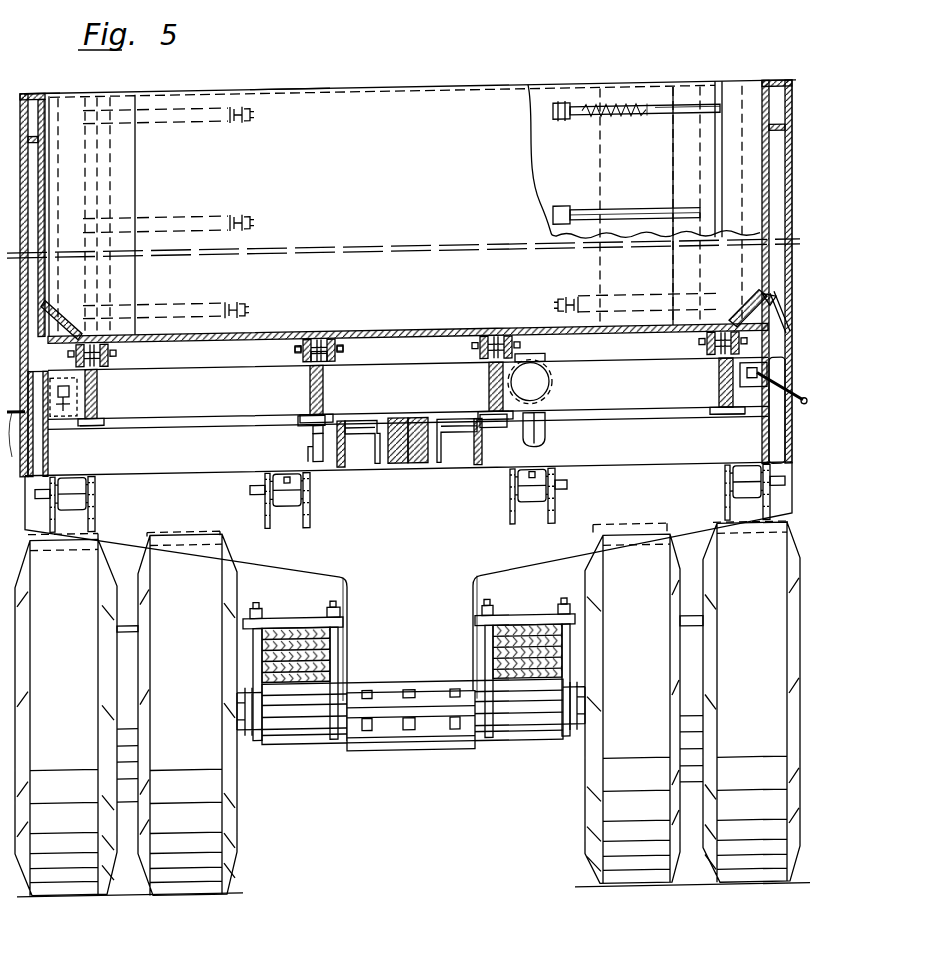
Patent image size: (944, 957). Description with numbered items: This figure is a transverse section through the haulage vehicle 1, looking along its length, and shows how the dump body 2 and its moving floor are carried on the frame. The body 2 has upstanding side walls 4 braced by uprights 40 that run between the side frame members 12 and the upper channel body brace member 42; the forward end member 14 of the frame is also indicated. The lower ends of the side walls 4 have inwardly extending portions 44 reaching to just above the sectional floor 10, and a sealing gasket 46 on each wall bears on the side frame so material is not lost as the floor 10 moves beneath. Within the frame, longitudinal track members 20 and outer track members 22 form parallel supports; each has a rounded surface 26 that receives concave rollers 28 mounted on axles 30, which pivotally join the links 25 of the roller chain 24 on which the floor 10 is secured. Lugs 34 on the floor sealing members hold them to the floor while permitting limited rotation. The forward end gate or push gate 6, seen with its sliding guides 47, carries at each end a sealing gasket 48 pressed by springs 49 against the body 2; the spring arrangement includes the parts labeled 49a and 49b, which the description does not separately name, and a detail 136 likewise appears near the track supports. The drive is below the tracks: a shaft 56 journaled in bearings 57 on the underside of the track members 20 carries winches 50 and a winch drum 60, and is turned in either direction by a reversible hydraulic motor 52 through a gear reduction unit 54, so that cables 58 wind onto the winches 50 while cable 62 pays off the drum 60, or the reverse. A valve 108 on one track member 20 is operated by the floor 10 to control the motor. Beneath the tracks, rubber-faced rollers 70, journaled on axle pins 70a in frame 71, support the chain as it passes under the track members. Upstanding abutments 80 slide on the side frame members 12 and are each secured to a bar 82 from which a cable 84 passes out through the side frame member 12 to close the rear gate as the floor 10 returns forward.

The haulage vehicle 1 is at (438, 752).
The body 2 is at (25, 84).
The side walls 4 is at (43, 197).
The forward end gate or push gate 6 is at (296, 103).
The sectional floor 10 is at (393, 331).
The side frame members 12 is at (48, 446).
The forward end member 14 is at (215, 470).
The track members 20 is at (312, 386).
The further track members 22 is at (97, 391).
The roller chain 24 is at (105, 354).
The links 25 is at (336, 342).
The rounded surface 26 is at (713, 358).
The concave rollers 28 is at (313, 342).
The axles 30 is at (297, 350).
The lugs 34 is at (325, 366).
The uprights 40 is at (784, 190).
The upper channel body brace member 42 is at (788, 92).
The inwardly extending portions 44 is at (768, 310).
The sealing gasket 46 is at (747, 316).
The sliding guides 47 is at (128, 132).
The sealing gasket 48 is at (47, 184).
The springs 49 is at (620, 117).
The bolt nut 49a is at (276, 189).
The bolt rod 49b is at (203, 301).
The winches 50 is at (363, 436).
The motor 52 is at (531, 357).
The gear reduction unit 54 is at (549, 389).
The shaft 56 is at (521, 430).
The bearings 57 is at (310, 433).
The cables 58 is at (342, 467).
The winch drum 60 is at (389, 452).
The cable 62 is at (414, 463).
The rollers 70 is at (83, 492).
The axle pins 70a is at (258, 486).
The frame 71 is at (320, 571).
The upstanding abutments 80 is at (749, 355).
The bar 82 is at (765, 381).
The cable 84 is at (48, 457).
The valve 108 is at (311, 446).
The strut foot 136 is at (82, 420).